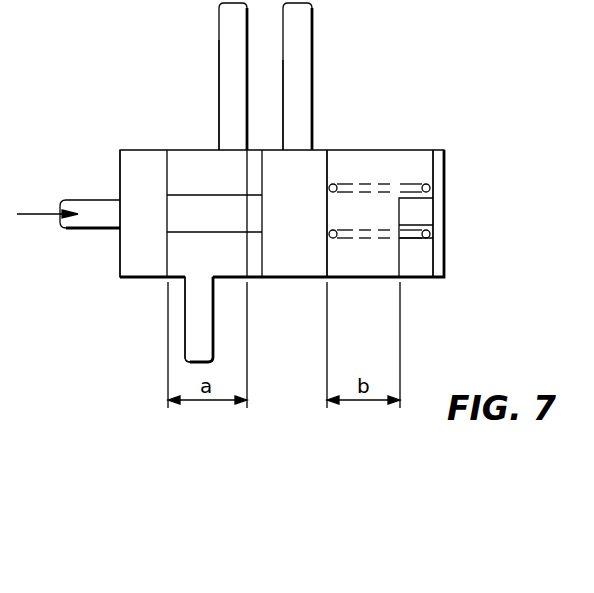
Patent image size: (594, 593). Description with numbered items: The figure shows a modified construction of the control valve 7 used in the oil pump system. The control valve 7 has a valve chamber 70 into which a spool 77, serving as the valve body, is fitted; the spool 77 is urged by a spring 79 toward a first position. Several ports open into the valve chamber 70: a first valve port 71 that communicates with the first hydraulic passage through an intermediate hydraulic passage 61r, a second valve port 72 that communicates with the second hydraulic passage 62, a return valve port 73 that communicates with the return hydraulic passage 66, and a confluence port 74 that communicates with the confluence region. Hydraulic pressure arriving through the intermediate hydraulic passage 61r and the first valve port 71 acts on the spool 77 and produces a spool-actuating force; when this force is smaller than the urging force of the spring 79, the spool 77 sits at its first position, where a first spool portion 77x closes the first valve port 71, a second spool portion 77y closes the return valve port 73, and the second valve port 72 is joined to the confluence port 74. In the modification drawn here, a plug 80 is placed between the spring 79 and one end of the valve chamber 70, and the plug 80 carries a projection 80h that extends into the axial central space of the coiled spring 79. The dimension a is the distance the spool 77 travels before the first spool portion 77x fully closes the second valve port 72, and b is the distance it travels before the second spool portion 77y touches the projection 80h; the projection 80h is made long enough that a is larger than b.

The control valve 7 is at (104, 286).
The intermediate hydraulic passage 61r is at (82, 197).
The second hydraulic passage 62 is at (219, 40).
The return hydraulic passage 66 is at (312, 30).
The valve chamber 70 is at (427, 263).
The first valve port 71 is at (90, 217).
The second valve port 72 is at (234, 152).
The return valve port 73 is at (297, 143).
The confluence port 74 is at (205, 320).
The spool 77 is at (158, 278).
The first spool portion 77x is at (130, 280).
The second spool portion 77y is at (312, 173).
The spring 79 is at (412, 240).
The plug 80 is at (438, 165).
The projection 80h is at (420, 217).